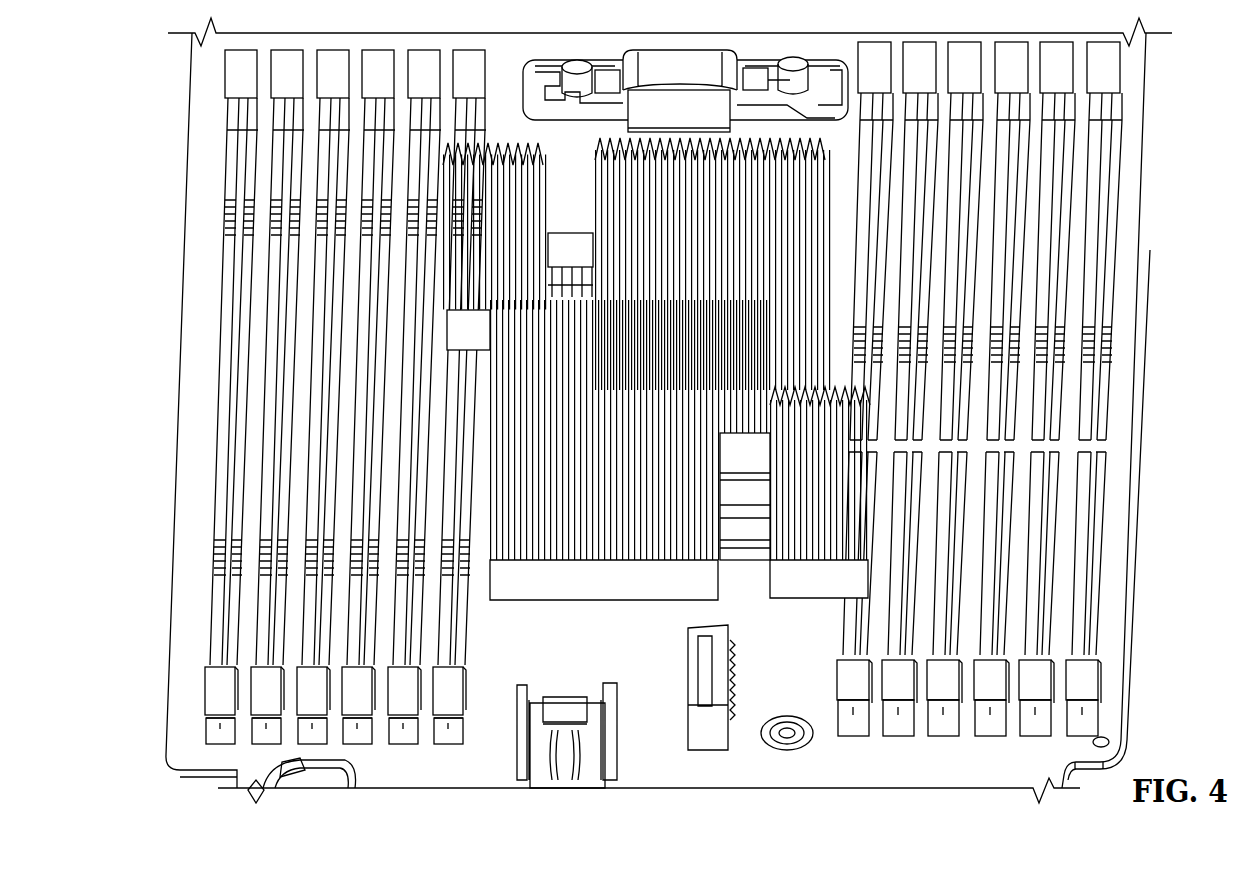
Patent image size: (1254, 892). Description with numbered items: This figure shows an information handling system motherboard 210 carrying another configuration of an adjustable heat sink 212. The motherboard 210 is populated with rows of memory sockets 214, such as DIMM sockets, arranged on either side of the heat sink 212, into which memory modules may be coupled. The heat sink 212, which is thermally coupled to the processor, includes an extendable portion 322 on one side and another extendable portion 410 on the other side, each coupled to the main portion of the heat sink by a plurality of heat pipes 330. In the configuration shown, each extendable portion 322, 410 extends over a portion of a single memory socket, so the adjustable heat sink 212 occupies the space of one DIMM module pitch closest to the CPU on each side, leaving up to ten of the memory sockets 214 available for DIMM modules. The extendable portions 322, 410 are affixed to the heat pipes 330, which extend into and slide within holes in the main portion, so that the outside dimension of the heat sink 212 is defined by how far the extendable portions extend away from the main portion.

The information handling system motherboard 210 is at (186, 121).
The adjustable heat sink 212 is at (587, 606).
The memory sockets 214 is at (405, 742).
The extendable portion 322 is at (812, 606).
The heat pipes 330 is at (742, 545).
The extendable portion 410 is at (430, 178).